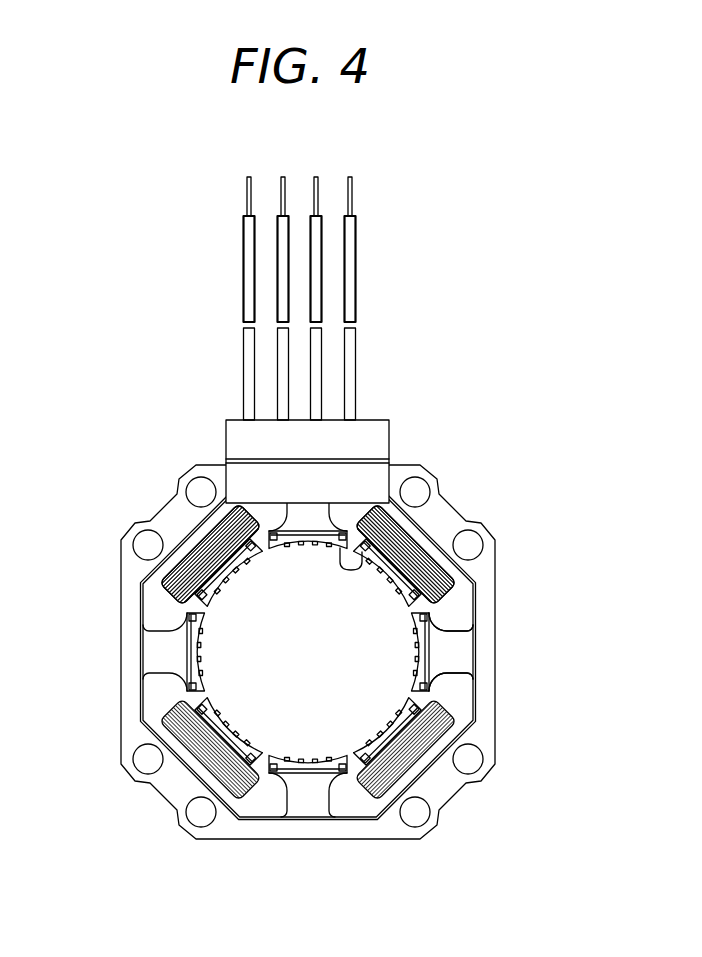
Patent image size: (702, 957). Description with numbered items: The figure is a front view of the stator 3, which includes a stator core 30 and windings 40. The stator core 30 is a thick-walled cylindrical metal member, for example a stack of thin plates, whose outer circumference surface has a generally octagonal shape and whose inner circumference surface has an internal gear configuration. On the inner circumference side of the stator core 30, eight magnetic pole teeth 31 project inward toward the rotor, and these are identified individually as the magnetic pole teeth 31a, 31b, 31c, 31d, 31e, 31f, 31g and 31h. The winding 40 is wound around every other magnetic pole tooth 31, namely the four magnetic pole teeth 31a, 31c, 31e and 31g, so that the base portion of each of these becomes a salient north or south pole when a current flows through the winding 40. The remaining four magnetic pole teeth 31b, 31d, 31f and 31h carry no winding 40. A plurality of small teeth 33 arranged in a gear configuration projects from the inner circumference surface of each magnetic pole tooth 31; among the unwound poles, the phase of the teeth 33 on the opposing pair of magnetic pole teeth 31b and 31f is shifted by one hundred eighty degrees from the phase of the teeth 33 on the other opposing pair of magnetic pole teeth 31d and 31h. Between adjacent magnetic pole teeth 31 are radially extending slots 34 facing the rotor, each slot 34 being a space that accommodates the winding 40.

The stator 3 is at (158, 504).
The stator core 30 is at (132, 596).
The magnetic pole teeth 31 is at (452, 653).
The magnetic pole tooth 31a is at (399, 561).
The magnetic pole tooth 31b is at (423, 652).
The magnetic pole tooth 31c is at (399, 743).
The magnetic pole tooth 31d is at (308, 776).
The magnetic pole tooth 31e is at (217, 743).
The magnetic pole tooth 31f is at (192, 652).
The magnetic pole tooth 31g is at (217, 561).
The magnetic pole tooth 31h is at (308, 532).
The teeth 33 is at (362, 552).
The slot 34 is at (276, 507).
The winding 40 is at (413, 547).